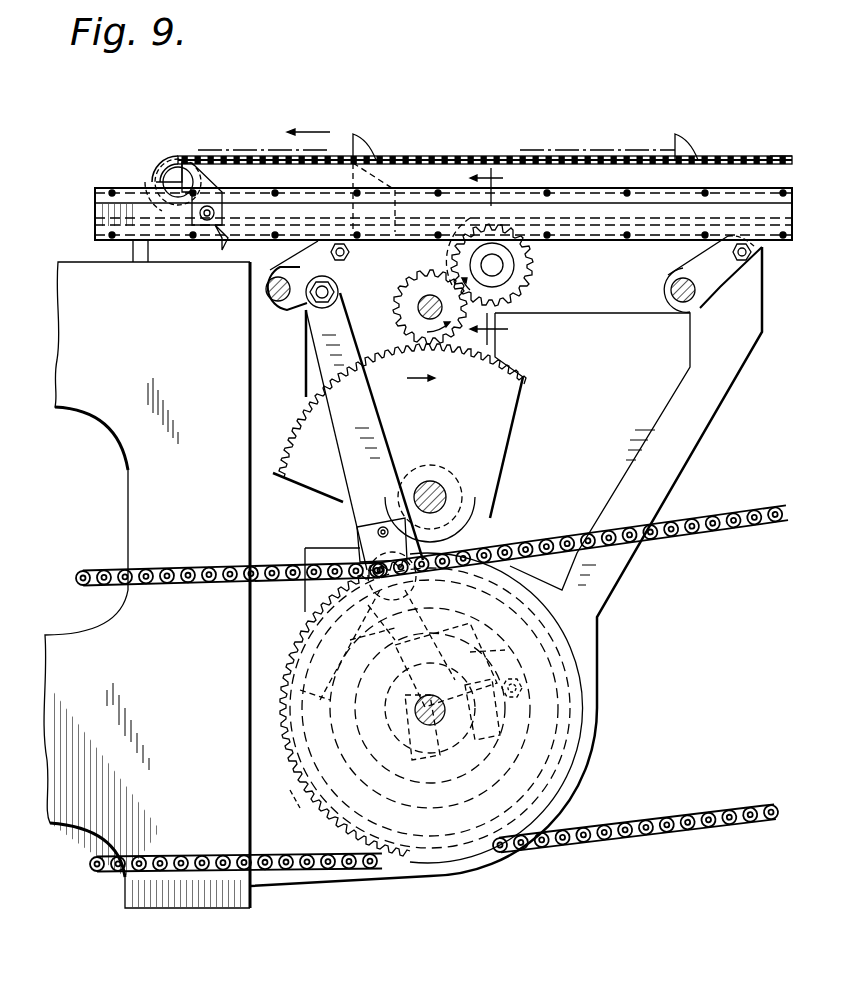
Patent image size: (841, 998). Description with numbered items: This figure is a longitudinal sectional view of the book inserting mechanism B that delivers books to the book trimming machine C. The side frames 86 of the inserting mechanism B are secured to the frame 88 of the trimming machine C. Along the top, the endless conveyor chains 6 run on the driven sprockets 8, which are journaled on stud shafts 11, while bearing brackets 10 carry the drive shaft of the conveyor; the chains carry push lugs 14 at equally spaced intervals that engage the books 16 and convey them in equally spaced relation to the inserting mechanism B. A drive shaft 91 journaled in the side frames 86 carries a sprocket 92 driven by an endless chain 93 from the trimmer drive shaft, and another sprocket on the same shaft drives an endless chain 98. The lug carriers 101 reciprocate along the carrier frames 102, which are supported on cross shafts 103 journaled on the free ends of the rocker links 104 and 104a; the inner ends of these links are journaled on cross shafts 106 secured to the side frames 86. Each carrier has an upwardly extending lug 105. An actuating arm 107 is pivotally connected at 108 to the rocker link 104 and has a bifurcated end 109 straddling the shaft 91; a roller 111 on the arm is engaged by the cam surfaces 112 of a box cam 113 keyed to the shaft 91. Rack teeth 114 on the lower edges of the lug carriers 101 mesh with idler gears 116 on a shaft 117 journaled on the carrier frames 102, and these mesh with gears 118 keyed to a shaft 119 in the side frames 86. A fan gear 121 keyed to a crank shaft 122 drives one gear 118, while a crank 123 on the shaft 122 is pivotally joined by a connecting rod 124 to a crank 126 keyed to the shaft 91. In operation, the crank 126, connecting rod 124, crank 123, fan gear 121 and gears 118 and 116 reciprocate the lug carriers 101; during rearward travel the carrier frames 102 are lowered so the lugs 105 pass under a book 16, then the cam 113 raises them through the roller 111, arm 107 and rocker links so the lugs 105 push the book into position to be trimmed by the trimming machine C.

The endless conveyor chain 6 is at (766, 155).
The driven sprocket 8 is at (170, 180).
The bearing bracket 10 is at (411, 237).
The stud shaft 11 is at (172, 172).
The push lug 14 is at (368, 140).
The book 16 is at (240, 149).
The side frame 86 is at (695, 428).
The frame 88 is at (128, 477).
The drive shaft 91 is at (420, 718).
The sprocket 92 is at (305, 806).
The endless chain 93 is at (205, 858).
The endless chain 98 is at (735, 806).
The lug carrier 101 is at (660, 210).
The carrier frame 102 is at (648, 241).
The cross shaft 103 is at (790, 263).
The rocker link 104 is at (262, 268).
The rocker link 104a is at (712, 292).
The lug 105 is at (200, 176).
The cross shaft 106 is at (268, 293).
The actuating arm 107 is at (365, 424).
The pivotal connection 108 is at (318, 302).
The bifurcated end 109 is at (430, 768).
The roller 111 is at (412, 626).
The cam surface 112 is at (347, 677).
The box cam 113 is at (283, 693).
The rack teeth 114 is at (525, 255).
The idler gear 116 is at (510, 275).
The shaft 117 is at (500, 272).
The gear 118 is at (418, 280).
The shaft 119 is at (420, 312).
The fan gear 121 is at (497, 418).
The crank shaft 122 is at (445, 500).
The crank 123 is at (403, 540).
The connecting rod 124 is at (545, 646).
The crank 126 is at (430, 708).
The book inserting mechanism B is at (466, 152).
The book trimming machine C is at (60, 272).